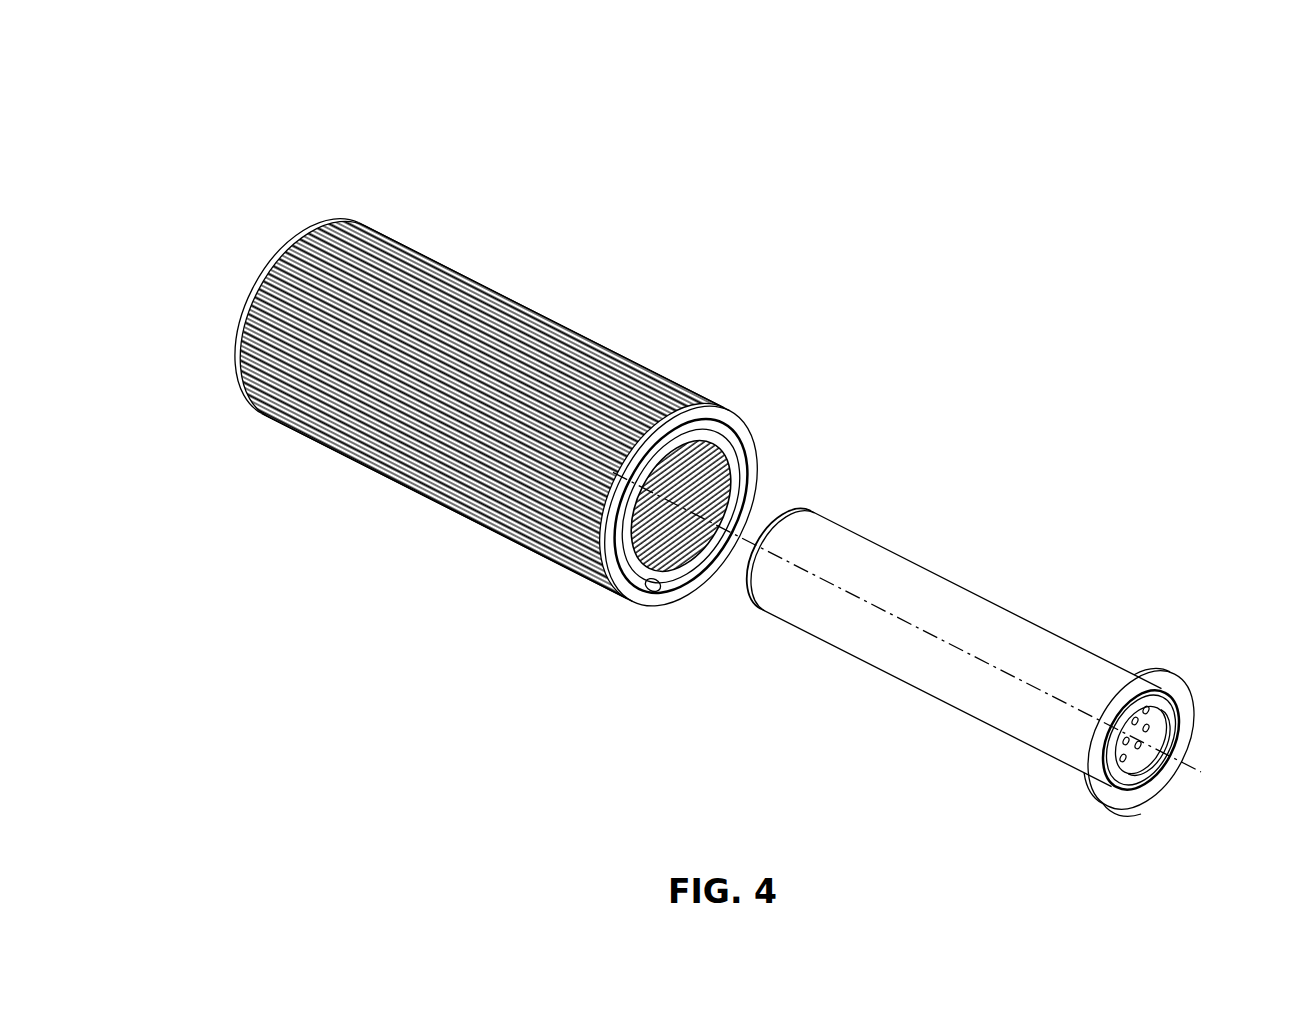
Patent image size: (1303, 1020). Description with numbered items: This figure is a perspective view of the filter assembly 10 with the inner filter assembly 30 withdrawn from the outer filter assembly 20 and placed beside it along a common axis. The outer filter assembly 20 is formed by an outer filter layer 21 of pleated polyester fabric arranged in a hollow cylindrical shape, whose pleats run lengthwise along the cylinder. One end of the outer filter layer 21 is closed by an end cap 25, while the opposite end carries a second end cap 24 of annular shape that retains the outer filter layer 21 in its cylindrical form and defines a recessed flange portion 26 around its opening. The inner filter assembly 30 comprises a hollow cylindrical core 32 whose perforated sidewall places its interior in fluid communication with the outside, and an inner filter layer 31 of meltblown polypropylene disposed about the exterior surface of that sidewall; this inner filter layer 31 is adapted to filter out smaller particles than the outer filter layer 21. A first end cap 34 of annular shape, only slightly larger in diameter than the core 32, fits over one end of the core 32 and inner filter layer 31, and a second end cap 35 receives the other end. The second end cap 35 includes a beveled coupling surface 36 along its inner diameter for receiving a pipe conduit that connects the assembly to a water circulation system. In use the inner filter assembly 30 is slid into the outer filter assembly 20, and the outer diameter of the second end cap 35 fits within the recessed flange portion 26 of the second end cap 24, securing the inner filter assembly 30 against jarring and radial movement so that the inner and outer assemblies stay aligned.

The filter assembly 10 is at (352, 186).
The outer filter assembly 20 is at (312, 478).
The outer filter layer 21 is at (417, 268).
The second end cap 24 is at (723, 408).
The closed end cap 25 is at (265, 268).
The recessed flange portion 26 is at (662, 584).
The inner filter assembly 30 is at (955, 525).
The inner filter layer 31 is at (840, 643).
The hollow cylindrical core 32 is at (1160, 722).
The first end cap 34 is at (783, 500).
The second end cap 35 is at (1153, 772).
The beveled coupling surface 36 is at (1123, 797).